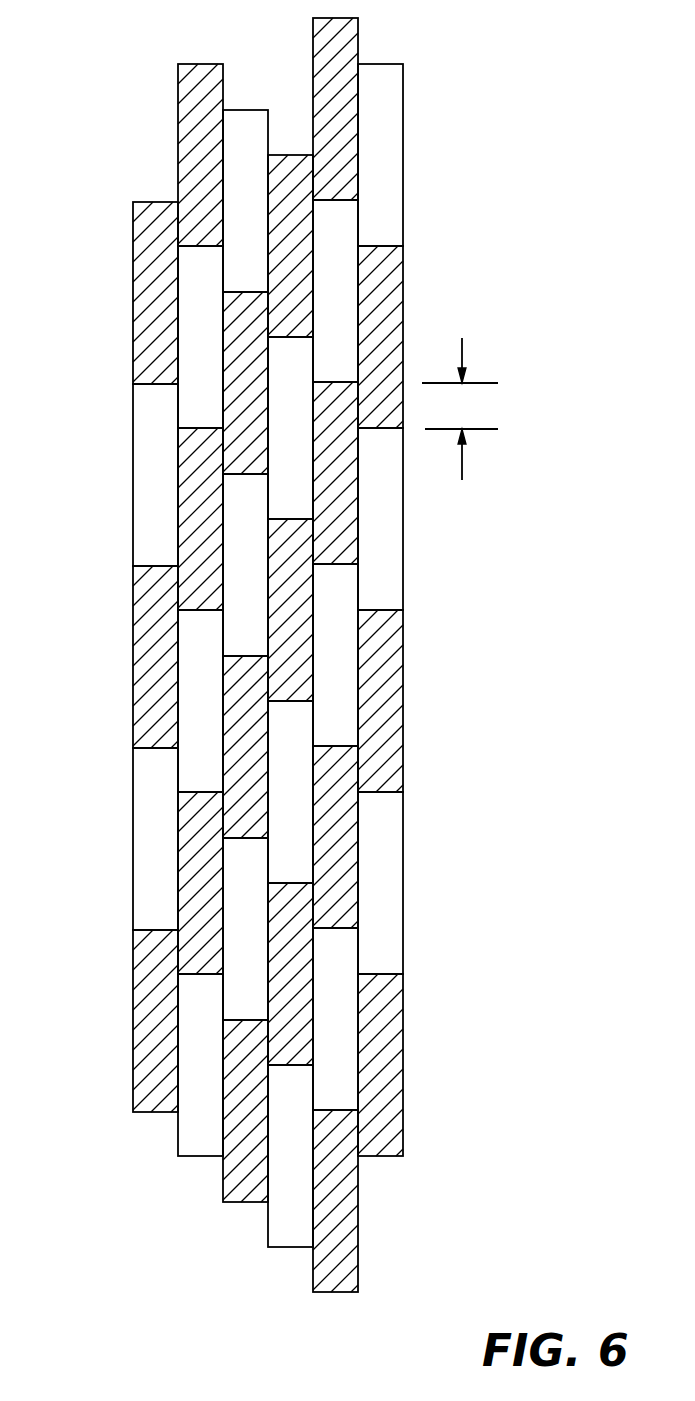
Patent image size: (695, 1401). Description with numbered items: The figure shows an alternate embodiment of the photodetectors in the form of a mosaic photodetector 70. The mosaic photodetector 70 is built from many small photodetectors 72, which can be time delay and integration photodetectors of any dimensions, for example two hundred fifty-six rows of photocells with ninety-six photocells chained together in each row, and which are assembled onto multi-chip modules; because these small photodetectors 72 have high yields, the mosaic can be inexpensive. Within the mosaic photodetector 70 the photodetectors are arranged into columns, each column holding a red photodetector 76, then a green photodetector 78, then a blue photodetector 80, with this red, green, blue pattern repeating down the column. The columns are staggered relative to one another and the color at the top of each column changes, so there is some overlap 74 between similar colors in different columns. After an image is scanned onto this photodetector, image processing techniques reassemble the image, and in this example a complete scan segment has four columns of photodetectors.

The mosaic photodetector 70 is at (302, 655).
The small photodetector 72 is at (133, 618).
The overlap 74 is at (460, 409).
The red photodetector 76 is at (388, 181).
The green photodetector 78 is at (388, 304).
The blue photodetector 80 is at (390, 542).